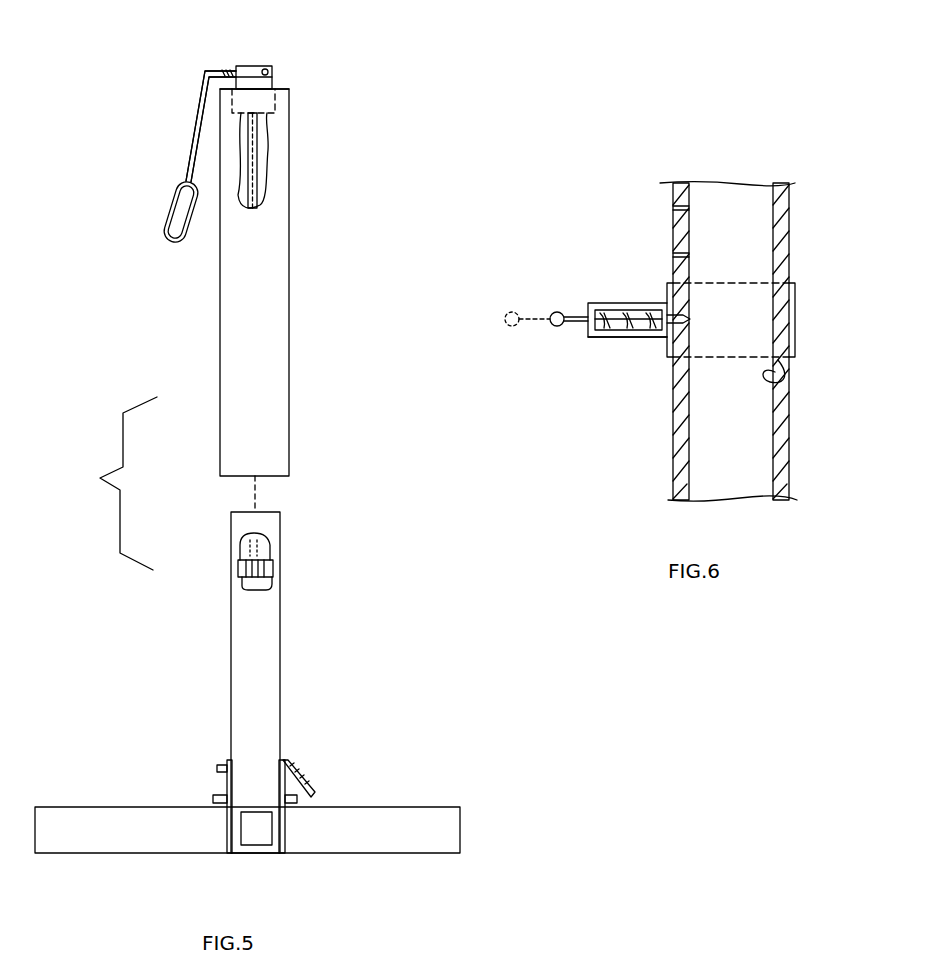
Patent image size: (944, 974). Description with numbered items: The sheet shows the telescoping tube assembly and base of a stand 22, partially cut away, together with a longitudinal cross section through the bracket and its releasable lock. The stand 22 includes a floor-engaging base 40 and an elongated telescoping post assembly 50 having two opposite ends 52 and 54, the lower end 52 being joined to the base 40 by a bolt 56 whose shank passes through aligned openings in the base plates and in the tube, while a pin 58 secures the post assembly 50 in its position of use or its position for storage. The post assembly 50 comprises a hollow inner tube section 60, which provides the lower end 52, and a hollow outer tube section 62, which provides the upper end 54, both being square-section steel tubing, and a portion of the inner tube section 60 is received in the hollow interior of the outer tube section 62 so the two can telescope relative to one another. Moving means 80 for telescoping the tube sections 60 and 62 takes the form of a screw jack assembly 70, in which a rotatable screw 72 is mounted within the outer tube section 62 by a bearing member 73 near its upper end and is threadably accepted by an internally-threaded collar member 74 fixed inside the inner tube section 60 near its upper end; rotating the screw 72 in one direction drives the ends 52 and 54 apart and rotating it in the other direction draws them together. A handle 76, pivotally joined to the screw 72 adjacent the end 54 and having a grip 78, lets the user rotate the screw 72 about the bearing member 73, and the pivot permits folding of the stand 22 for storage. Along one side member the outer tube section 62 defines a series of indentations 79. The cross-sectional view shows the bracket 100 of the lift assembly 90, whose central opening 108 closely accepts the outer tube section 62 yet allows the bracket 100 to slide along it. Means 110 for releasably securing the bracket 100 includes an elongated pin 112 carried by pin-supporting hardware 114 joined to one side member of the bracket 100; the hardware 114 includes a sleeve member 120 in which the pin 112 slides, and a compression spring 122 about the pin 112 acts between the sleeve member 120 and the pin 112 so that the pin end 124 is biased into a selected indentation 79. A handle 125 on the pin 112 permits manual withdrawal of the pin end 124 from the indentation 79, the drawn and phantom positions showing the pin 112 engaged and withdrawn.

In FIG. 5, the stand 22 is at (220, 407).
In FIG. 5, the floor-engaging base 40 is at (92, 808).
In FIG. 5, the telescoping post assembly 50 is at (110, 483).
In FIG. 5, the end of the post assembly 52 is at (255, 808).
In FIG. 5, the end of the post assembly 54 is at (280, 89).
In FIG. 5, the bolt 56 is at (215, 798).
In FIG. 5, the pin 58 is at (292, 758).
In FIG. 5, the inner tube section 60 is at (280, 647).
In FIG. 5, the outer tube section 62 is at (290, 212).
In FIG. 6, the outer tube section 62 is at (790, 208).
In FIG. 5, the screw jack assembly 70 is at (248, 66).
In FIG. 5, the rotatable screw 72 is at (257, 150).
In FIG. 5, the bearing member 73 is at (273, 107).
In FIG. 5, the collar member 74 is at (260, 560).
In FIG. 5, the handle 76 is at (197, 120).
In FIG. 5, the grip 78 is at (170, 210).
In FIG. 6, the indentations 79 is at (673, 255).
In FIG. 5, the moving means 80 is at (330, 78).
In FIG. 6, the lift assembly 90 is at (795, 298).
In FIG. 6, the bracket 100 is at (795, 333).
In FIG. 6, the central opening 108 is at (775, 372).
In FIG. 6, the means for releasably securing 110 is at (638, 414).
In FIG. 6, the elongated pin 112 is at (628, 310).
In FIG. 6, the pin-supporting hardware 114 is at (635, 337).
In FIG. 6, the sleeve member 120 is at (590, 305).
In FIG. 6, the compression spring 122 is at (610, 330).
In FIG. 6, the pin end 124 is at (690, 313).
In FIG. 6, the handle 125 is at (555, 327).